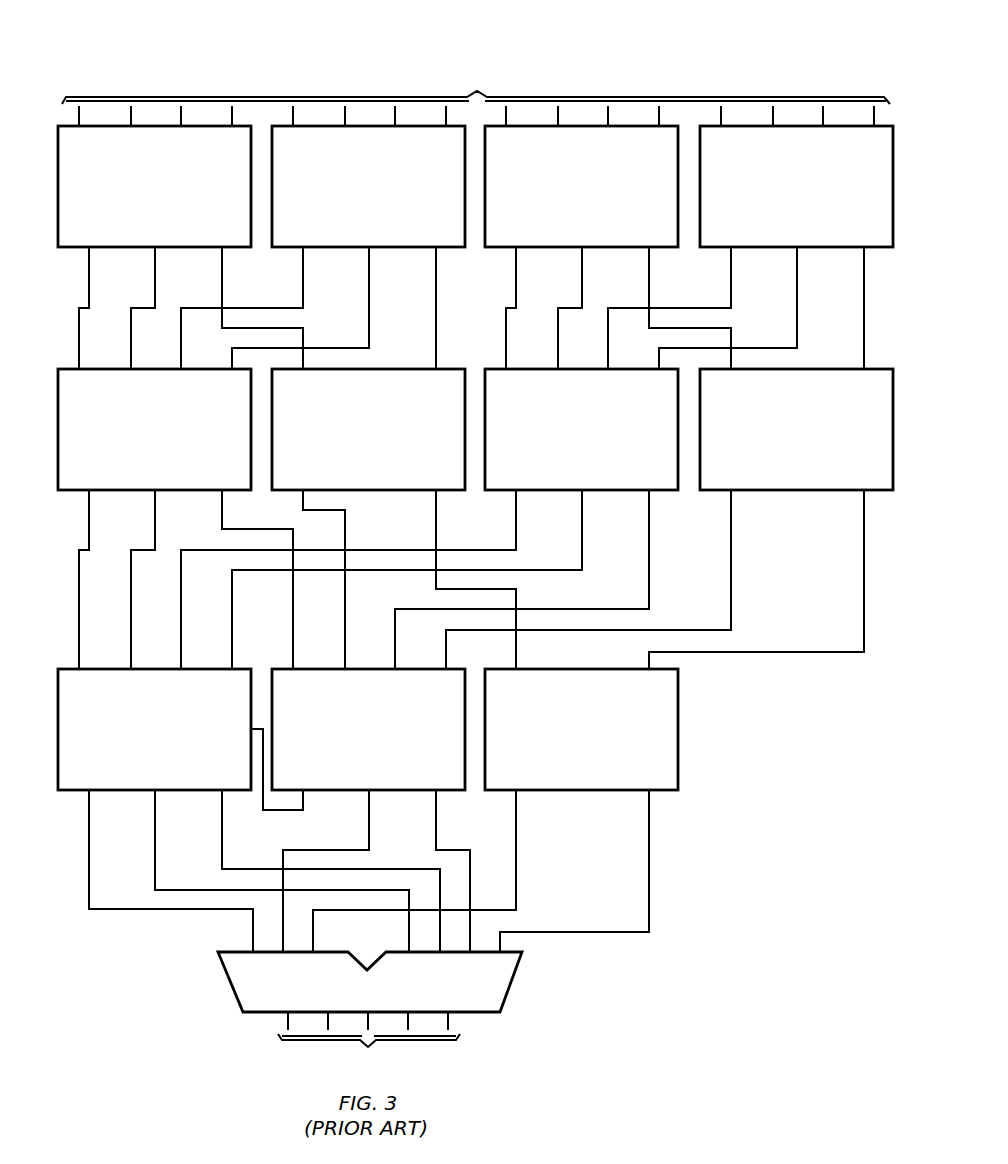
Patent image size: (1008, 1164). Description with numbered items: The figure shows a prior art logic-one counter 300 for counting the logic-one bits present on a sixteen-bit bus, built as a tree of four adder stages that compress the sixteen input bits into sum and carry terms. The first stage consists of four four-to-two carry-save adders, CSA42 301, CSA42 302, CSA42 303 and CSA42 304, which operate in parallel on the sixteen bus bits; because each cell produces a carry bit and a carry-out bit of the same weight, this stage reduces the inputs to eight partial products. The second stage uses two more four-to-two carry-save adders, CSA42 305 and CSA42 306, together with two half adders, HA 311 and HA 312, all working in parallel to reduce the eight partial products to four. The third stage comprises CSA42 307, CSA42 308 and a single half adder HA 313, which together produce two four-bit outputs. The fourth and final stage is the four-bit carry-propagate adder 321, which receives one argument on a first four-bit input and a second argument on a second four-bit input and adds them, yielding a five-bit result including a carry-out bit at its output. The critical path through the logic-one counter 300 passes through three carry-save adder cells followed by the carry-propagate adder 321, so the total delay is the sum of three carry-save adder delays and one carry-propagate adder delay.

The Logic 1 counter 300 is at (236, 66).
The CSA42 301 is at (137, 250).
The CSA42 302 is at (350, 250).
The CSA42 303 is at (630, 250).
The CSA42 304 is at (845, 250).
The CSA42 305 is at (137, 493).
The CSA42 306 is at (603, 493).
The CSA42 307 is at (137, 792).
The CSA42 308 is at (350, 792).
The HA 311 is at (373, 493).
The HA 312 is at (802, 493).
The HA 313 is at (582, 792).
The 4-bit carry-propagate adder 321 is at (516, 979).